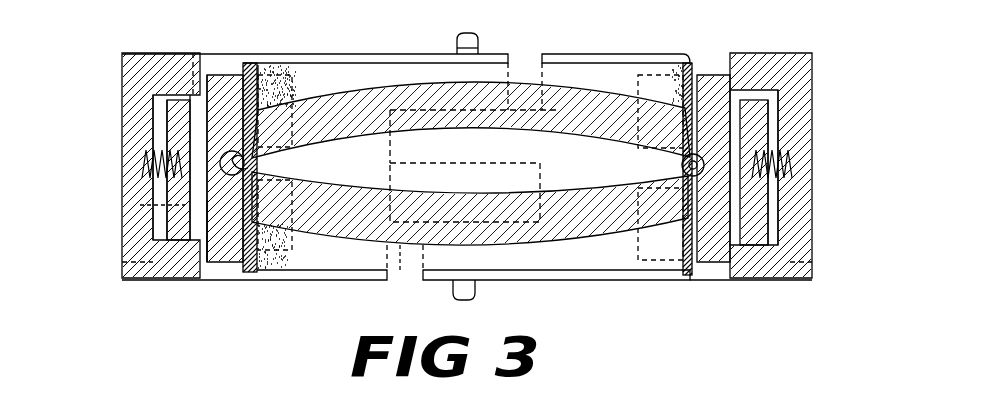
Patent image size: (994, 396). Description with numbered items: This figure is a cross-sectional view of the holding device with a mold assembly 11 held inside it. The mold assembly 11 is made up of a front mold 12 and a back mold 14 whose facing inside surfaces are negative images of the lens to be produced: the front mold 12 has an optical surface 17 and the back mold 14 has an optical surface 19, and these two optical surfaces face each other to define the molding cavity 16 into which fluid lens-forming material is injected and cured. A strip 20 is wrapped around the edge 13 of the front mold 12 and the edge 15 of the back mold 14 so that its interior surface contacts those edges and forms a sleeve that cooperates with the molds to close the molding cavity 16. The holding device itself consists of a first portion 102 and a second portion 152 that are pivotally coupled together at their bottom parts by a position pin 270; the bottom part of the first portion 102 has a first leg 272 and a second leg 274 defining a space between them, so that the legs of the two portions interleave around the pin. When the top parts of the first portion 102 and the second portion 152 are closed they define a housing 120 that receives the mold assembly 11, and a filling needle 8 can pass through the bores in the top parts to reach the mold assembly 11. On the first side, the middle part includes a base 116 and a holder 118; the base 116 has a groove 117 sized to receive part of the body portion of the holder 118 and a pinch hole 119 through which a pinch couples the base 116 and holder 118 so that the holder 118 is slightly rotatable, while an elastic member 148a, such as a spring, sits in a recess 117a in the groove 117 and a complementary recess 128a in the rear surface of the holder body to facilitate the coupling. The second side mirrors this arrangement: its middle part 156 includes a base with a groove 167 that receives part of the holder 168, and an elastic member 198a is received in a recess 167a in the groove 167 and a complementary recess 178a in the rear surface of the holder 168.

The filling needle 8 is at (682, 163).
The mold assembly 11 is at (410, 248).
The front mold 12 is at (556, 248).
The edge 13 is at (222, 212).
The back mold 14 is at (578, 100).
The edge 15 is at (244, 125).
The molding cavity 16 is at (376, 177).
The optical surface 17 is at (600, 190).
The optical surface 19 is at (626, 115).
The strip 20 is at (372, 75).
The first portion 102 is at (147, 284).
The base 116 is at (128, 142).
The groove 117 is at (160, 236).
The recess 117a is at (158, 174).
The holder 118 is at (222, 72).
The pinch hole 119 is at (190, 60).
The housing 120 is at (390, 284).
The recess 128a is at (140, 206).
The elastic member 148a is at (170, 140).
The second portion 152 is at (806, 284).
The middle part 156 is at (812, 84).
The groove 167 is at (770, 214).
The recess 167a is at (812, 204).
The holder 168 is at (708, 70).
The recess 178a is at (790, 126).
The elastic member 198a is at (776, 152).
The position pin 270 is at (462, 38).
The first leg 272 is at (494, 226).
The second leg 274 is at (514, 58).